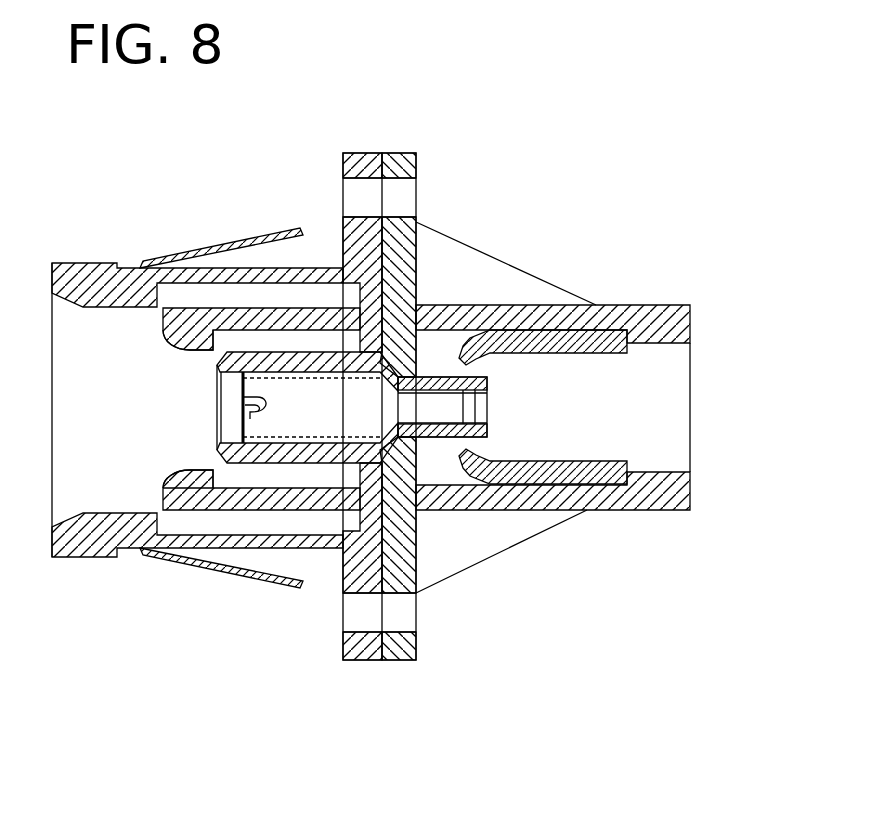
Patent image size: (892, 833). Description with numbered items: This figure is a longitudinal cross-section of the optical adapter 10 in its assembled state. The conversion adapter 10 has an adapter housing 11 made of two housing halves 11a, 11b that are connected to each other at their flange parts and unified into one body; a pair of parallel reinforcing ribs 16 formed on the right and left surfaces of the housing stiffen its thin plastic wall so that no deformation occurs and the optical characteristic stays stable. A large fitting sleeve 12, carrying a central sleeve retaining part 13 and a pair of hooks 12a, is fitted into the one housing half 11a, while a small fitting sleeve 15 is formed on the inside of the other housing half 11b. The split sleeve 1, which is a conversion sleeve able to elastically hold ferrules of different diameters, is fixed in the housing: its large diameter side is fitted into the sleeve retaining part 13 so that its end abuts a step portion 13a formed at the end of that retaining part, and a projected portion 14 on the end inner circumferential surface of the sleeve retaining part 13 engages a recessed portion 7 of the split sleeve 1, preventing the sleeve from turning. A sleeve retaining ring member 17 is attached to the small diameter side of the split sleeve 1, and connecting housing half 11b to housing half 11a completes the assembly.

The split sleeve 1 is at (445, 410).
The recessed portion 7 is at (264, 410).
The optical adapter 10 is at (448, 208).
The adapter housing 11 is at (382, 153).
The housing half 11a is at (75, 263).
The housing half 11b is at (640, 305).
The large fitting sleeve 12 is at (305, 307).
The hooks 12a is at (196, 349).
The sleeve retaining part 13 is at (247, 353).
The step portion 13a is at (222, 395).
The projected portion 14 is at (238, 410).
The small fitting sleeve 15 is at (507, 347).
The reinforcing ribs 16 is at (483, 252).
The sleeve retaining ring member 17 is at (490, 432).